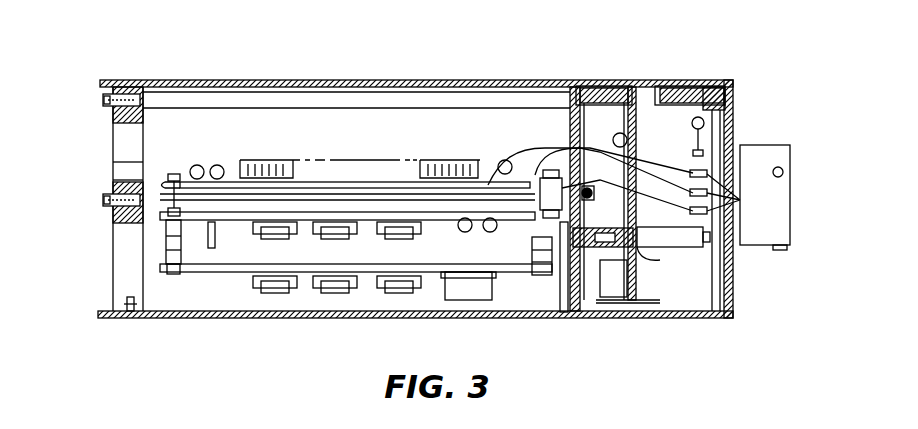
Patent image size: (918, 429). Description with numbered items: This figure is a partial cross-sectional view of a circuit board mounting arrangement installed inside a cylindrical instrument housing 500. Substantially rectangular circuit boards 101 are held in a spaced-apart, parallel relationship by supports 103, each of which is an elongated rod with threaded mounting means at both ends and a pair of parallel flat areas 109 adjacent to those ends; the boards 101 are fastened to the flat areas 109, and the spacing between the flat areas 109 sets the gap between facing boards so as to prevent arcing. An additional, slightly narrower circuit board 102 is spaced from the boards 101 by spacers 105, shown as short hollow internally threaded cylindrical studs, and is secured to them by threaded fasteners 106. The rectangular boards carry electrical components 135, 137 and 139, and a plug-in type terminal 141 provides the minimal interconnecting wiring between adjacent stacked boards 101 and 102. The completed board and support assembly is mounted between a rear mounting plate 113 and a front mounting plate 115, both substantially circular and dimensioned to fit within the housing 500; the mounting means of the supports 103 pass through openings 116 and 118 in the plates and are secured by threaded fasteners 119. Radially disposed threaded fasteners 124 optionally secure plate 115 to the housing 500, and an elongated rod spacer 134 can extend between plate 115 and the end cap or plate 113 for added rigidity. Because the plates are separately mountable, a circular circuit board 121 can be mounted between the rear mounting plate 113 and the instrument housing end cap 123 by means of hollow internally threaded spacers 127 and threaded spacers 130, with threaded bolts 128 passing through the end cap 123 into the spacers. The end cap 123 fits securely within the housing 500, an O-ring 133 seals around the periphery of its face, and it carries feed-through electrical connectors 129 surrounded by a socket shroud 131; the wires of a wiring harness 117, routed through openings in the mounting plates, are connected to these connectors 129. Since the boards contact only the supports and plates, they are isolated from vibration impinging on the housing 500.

The instrument housing 500 is at (288, 80).
The elongated rod spacer 134 is at (216, 100).
The mounting plate 115 is at (128, 85).
The opening 118 is at (114, 211).
The threaded fastener 119 is at (110, 203).
The radially disposed threaded fastener 124 is at (128, 320).
The support 103 is at (325, 197).
The circuit board 102 is at (232, 274).
The electrical component 135 is at (430, 156).
The electrical component 139 is at (217, 165).
The circuit board 101 is at (535, 162).
The electrical component 137 is at (470, 301).
The spacer 105 is at (162, 247).
The threaded fastener 106 is at (172, 274).
The plug-in type terminal 141 is at (209, 250).
The flat area 109 is at (170, 182).
The mounting plate 113 is at (566, 85).
The opening 116 is at (588, 190).
The hollow internally threaded spacer 127 is at (601, 88).
The threaded spacer 130 is at (689, 88).
The O-ring 133 is at (715, 83).
The threaded bolt 128 is at (735, 95).
The instrument housing end cap 123 is at (733, 265).
The wiring harness 117 is at (688, 175).
The socket shroud 131 is at (758, 145).
The feed-through electrical connector 129 is at (742, 200).
The circular circuit board 121 is at (644, 303).